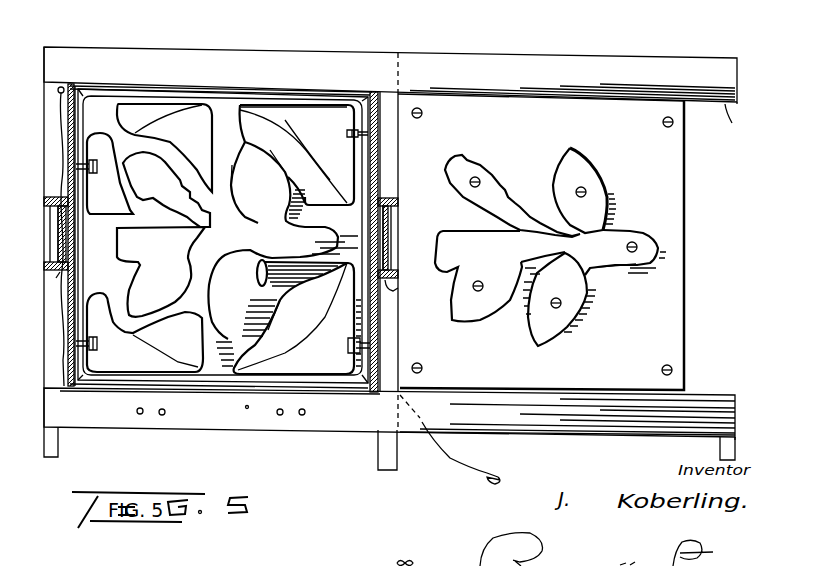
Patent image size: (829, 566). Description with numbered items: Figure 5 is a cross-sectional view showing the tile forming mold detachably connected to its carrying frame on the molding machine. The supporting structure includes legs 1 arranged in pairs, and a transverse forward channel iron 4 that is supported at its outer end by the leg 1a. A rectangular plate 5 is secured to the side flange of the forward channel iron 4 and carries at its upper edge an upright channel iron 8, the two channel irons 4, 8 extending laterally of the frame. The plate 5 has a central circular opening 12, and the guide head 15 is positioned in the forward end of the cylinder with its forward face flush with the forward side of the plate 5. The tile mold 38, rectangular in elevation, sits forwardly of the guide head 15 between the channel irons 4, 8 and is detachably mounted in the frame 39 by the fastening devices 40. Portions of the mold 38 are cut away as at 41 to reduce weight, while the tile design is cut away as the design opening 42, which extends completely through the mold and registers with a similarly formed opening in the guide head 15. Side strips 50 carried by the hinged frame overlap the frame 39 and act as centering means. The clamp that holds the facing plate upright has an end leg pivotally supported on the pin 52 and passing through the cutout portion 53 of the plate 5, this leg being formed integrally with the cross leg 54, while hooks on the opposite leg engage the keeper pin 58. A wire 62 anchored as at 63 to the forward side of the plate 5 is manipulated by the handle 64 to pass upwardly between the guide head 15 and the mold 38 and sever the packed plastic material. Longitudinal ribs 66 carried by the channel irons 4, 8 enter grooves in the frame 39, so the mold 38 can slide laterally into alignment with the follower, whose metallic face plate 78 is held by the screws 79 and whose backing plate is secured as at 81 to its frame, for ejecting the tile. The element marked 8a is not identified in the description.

The legs 1 is at (378, 452).
The leg 1a is at (62, 447).
The forward channel iron 4 is at (218, 422).
The plate 5 is at (294, 120).
The upright channel iron 8 is at (588, 58).
The side panel 8a is at (686, 210).
The central circular opening 12 is at (315, 158).
The guide head 15 is at (315, 189).
The tile mold 38 is at (230, 117).
The frame 39 is at (332, 92).
The fastening devices 40 is at (100, 163).
The cutaway portions 41 is at (258, 337).
The design opening 42 is at (282, 187).
The side strips 50 is at (68, 113).
The pin 52 is at (58, 226).
The cutout portion 53 is at (55, 278).
The cross leg 54 is at (58, 268).
The keeper pin 58 is at (393, 233).
The wire 62 is at (63, 333).
The wire anchorage 63 is at (61, 87).
The handle 64 is at (476, 489).
The longitudinal ribs 66 is at (710, 393).
The metallic face plate 78 is at (620, 268).
The screws 79 is at (478, 178).
The securing means 81 is at (423, 115).